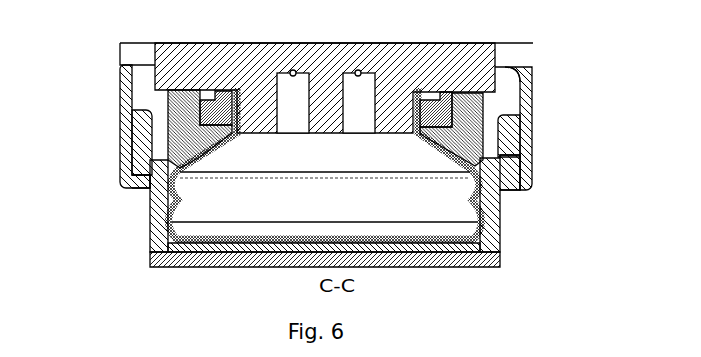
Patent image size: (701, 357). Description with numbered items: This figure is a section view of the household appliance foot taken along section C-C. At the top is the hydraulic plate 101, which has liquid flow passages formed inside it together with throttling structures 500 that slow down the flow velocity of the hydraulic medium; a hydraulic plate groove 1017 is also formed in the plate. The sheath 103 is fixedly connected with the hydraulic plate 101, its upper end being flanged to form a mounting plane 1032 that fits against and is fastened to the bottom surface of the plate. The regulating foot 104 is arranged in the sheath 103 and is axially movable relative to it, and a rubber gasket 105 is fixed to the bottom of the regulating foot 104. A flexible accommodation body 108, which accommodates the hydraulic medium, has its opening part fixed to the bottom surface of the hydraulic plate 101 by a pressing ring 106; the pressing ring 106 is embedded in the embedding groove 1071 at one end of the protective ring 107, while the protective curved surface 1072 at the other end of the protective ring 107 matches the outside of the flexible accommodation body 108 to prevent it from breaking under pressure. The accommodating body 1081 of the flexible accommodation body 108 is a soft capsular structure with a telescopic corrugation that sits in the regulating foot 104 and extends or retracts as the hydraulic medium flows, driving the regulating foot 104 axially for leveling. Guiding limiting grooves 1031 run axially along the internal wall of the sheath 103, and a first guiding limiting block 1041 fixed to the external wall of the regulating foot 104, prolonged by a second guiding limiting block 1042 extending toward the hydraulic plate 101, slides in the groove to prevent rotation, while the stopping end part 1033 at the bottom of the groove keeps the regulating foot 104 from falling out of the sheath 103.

The hydraulic plate 101 is at (458, 44).
The throttling structure 500 is at (291, 70).
The sheath 103 is at (120, 177).
The stopping end part 1033 is at (145, 185).
The protective curved surface 1072 is at (168, 140).
The pressing ring 106 is at (278, 116).
The protective ring 107 is at (178, 133).
The embedding groove 1071 is at (220, 112).
The hydraulic plate groove 1017 is at (223, 90).
The accommodating body 1081 is at (495, 228).
The regulating foot 104 is at (150, 251).
The first guiding limiting block 1041 is at (517, 173).
The rubber gasket 105 is at (263, 253).
The flexible accommodation body 108 is at (392, 240).
The guiding limiting groove 1031 is at (508, 84).
The mounting plane 1032 is at (523, 70).
The second guiding limiting block 1042 is at (508, 128).